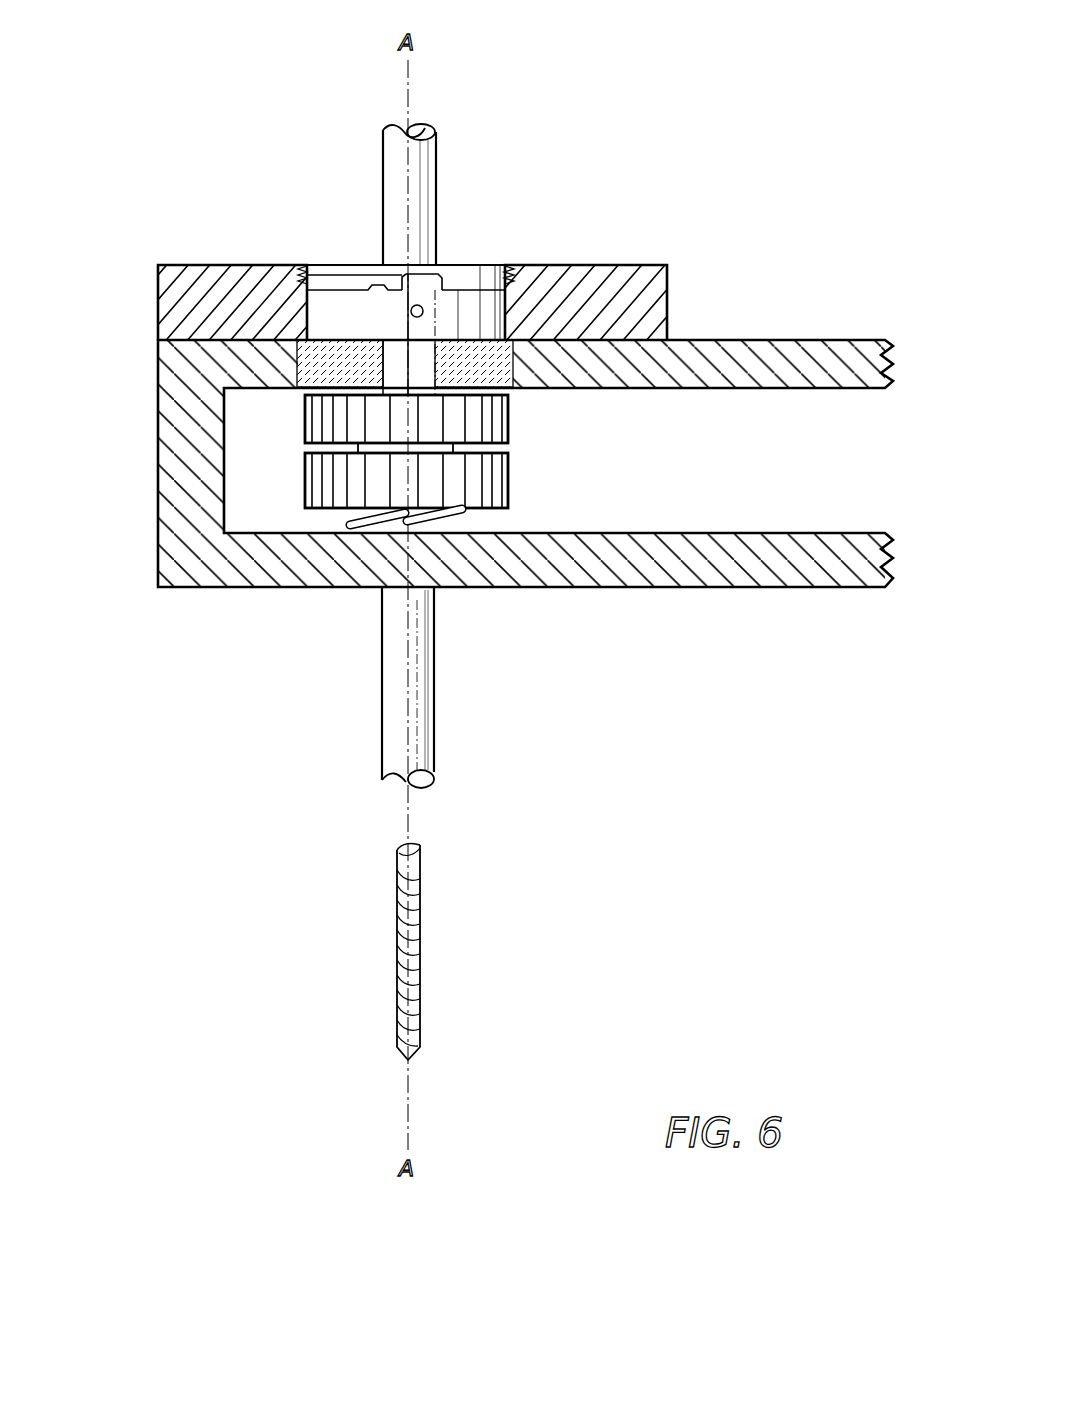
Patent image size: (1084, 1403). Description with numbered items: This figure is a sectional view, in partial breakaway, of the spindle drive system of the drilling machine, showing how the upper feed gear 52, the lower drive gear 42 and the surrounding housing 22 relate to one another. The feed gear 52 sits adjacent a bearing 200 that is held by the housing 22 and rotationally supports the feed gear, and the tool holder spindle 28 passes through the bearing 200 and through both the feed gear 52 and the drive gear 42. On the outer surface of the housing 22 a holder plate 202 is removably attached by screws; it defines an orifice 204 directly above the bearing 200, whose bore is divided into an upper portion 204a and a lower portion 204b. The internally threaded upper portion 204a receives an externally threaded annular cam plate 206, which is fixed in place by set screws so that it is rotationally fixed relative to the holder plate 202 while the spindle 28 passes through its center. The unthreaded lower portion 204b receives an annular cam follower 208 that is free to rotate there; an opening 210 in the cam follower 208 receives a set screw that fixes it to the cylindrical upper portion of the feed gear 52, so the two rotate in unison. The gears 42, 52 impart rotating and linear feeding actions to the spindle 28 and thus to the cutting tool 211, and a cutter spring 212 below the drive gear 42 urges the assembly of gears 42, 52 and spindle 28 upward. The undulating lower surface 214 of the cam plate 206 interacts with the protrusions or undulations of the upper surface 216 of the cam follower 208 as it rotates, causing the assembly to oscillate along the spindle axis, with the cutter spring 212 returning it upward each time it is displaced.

The housing 22 is at (743, 347).
The tool holder spindle 28 is at (392, 665).
The lower drive gear 42 is at (508, 468).
The upper feed gear 52 is at (508, 417).
The bearing 200 is at (505, 315).
The holder plate 202 is at (670, 270).
The orifice 204 is at (307, 313).
The upper portion 204a is at (303, 279).
The lower portion 204b is at (307, 300).
The cam plate 206 is at (427, 309).
The cam follower 208 is at (350, 308).
The opening 210 is at (447, 272).
The cutting tool 211 is at (400, 945).
The cutter spring 212 is at (466, 520).
The lower surface 214 is at (483, 340).
The upper surface 216 is at (399, 285).